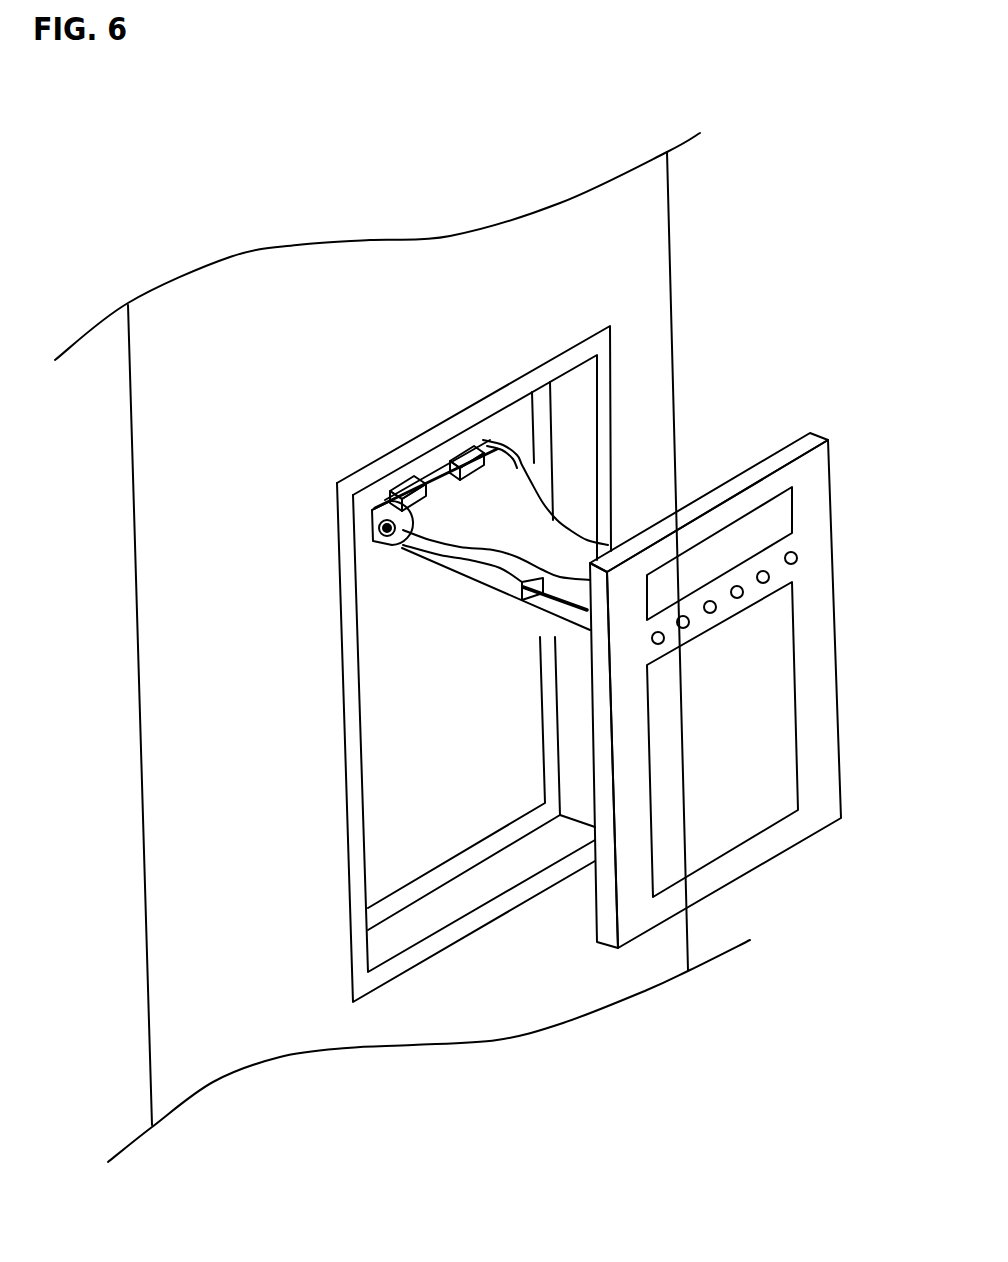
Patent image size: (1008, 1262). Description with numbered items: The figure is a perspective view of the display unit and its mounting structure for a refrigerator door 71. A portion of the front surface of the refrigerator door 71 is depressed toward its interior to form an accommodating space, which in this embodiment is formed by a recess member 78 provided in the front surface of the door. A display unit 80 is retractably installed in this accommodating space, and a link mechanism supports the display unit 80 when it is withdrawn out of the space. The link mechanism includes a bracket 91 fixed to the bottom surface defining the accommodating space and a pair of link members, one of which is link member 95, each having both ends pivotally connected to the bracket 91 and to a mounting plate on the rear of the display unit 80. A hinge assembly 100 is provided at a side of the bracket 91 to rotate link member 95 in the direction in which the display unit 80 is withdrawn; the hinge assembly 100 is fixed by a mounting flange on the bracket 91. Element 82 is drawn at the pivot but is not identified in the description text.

The refrigerator door 71 is at (670, 263).
The recess member 78 is at (500, 908).
The display unit 80 is at (864, 545).
The hinge 82 is at (380, 532).
The bracket 91 is at (395, 873).
The link member 95 is at (577, 560).
The hinge assembly 100 is at (431, 460).